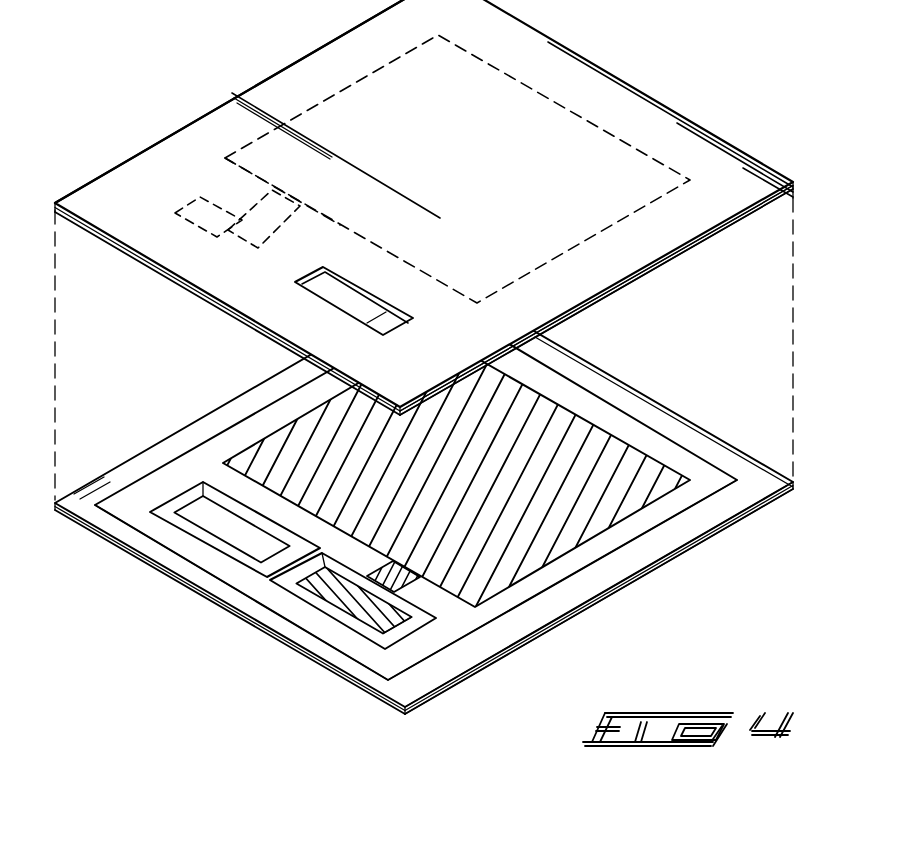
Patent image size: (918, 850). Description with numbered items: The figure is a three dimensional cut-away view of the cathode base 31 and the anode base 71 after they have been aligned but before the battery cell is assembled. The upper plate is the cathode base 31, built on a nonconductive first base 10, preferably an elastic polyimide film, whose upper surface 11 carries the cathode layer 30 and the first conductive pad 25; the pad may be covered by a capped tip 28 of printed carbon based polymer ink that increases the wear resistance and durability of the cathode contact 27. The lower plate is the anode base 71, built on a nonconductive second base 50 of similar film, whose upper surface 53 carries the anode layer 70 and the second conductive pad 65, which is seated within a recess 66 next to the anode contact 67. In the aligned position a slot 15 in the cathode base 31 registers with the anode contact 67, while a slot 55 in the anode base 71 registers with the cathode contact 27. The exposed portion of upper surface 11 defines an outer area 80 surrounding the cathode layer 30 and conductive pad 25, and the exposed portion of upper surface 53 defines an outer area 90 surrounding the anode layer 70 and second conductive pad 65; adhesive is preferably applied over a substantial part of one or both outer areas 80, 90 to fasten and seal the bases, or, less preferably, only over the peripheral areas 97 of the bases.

The first base 10 is at (549, 37).
The upper surface 11 is at (652, 272).
The slot 15 is at (332, 292).
The first conductive pad 25 is at (230, 263).
The cathode contact 27 is at (232, 240).
The capped tip 28 is at (199, 215).
The cathode layer 30 is at (432, 271).
The cathode base 31 is at (106, 158).
The second base 50 is at (684, 417).
The upper surface 53 is at (603, 575).
The slot 55 is at (223, 527).
The second conductive pad 65 is at (338, 623).
The second recess 66 is at (305, 595).
The anode contact 67 is at (380, 625).
The anode layer 70 is at (650, 508).
The anode base 71 is at (482, 682).
The outer area 80 is at (713, 233).
The outer area 90 is at (242, 415).
The peripheral areas 97 is at (225, 560).